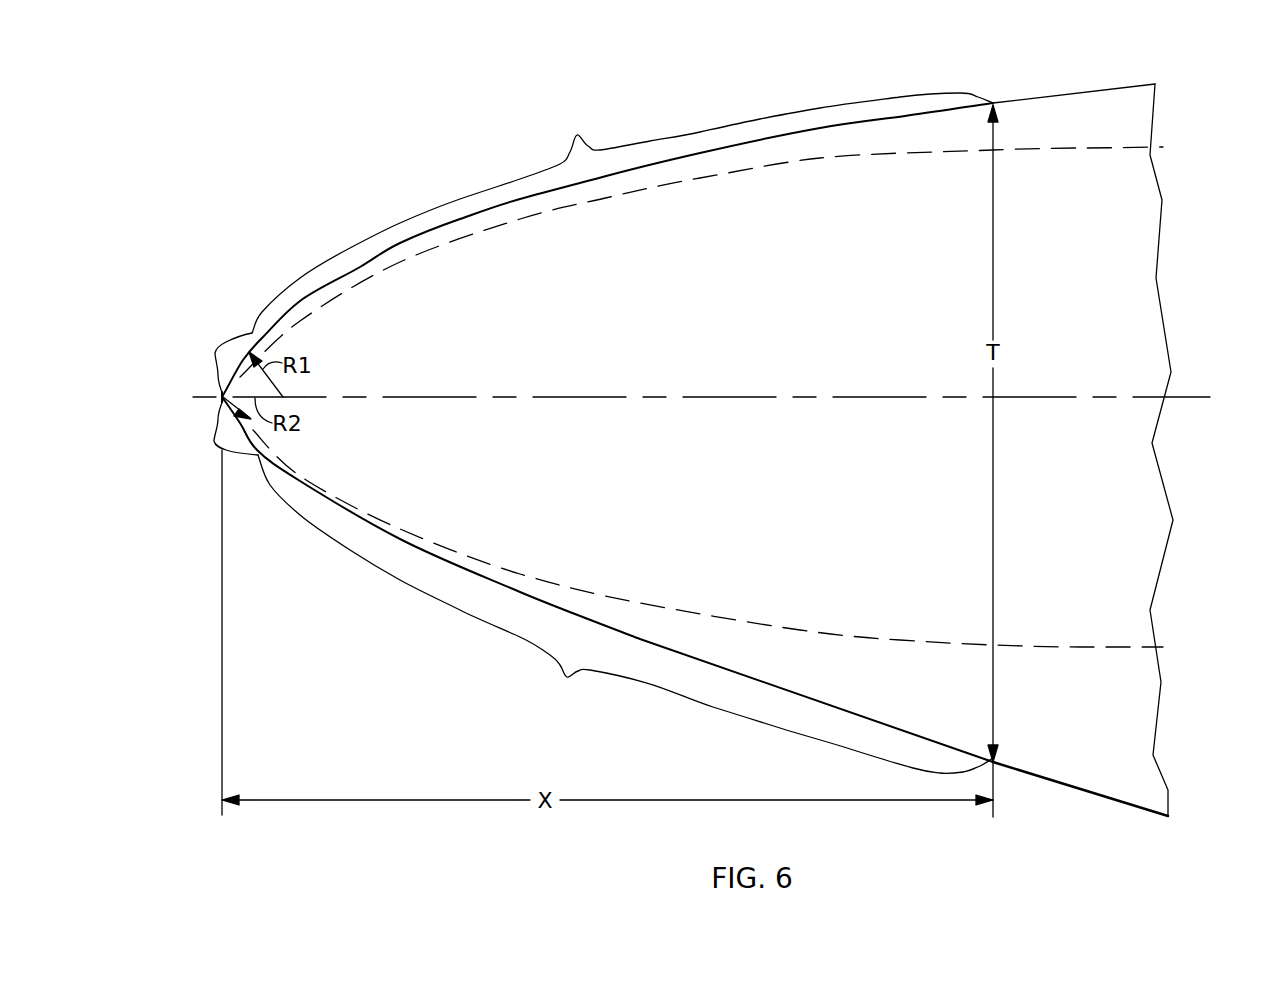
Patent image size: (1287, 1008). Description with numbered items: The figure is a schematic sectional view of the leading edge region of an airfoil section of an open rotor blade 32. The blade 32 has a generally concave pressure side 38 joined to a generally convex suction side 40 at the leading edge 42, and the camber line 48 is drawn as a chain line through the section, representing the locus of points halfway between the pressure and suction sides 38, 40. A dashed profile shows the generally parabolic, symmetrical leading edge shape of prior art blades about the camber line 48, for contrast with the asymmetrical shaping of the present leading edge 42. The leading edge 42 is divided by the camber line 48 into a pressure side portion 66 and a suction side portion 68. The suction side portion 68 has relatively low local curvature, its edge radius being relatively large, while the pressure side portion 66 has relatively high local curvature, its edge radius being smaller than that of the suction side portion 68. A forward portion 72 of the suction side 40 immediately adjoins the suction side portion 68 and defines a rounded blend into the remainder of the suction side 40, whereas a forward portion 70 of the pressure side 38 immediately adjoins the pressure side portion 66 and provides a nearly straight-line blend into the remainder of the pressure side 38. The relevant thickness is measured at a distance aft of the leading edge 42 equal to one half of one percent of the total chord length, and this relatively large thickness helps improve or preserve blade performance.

The blade 32 is at (1195, 112).
The pressure side 38 is at (1145, 814).
The suction side 40 is at (1140, 84).
The leading edge 42 is at (215, 390).
The camber line 48 is at (1183, 397).
The pressure side portion 66 is at (214, 441).
The suction side portion 68 is at (215, 353).
The forward portion of the pressure side 70 is at (607, 585).
The forward portion of the suction side 72 is at (607, 245).